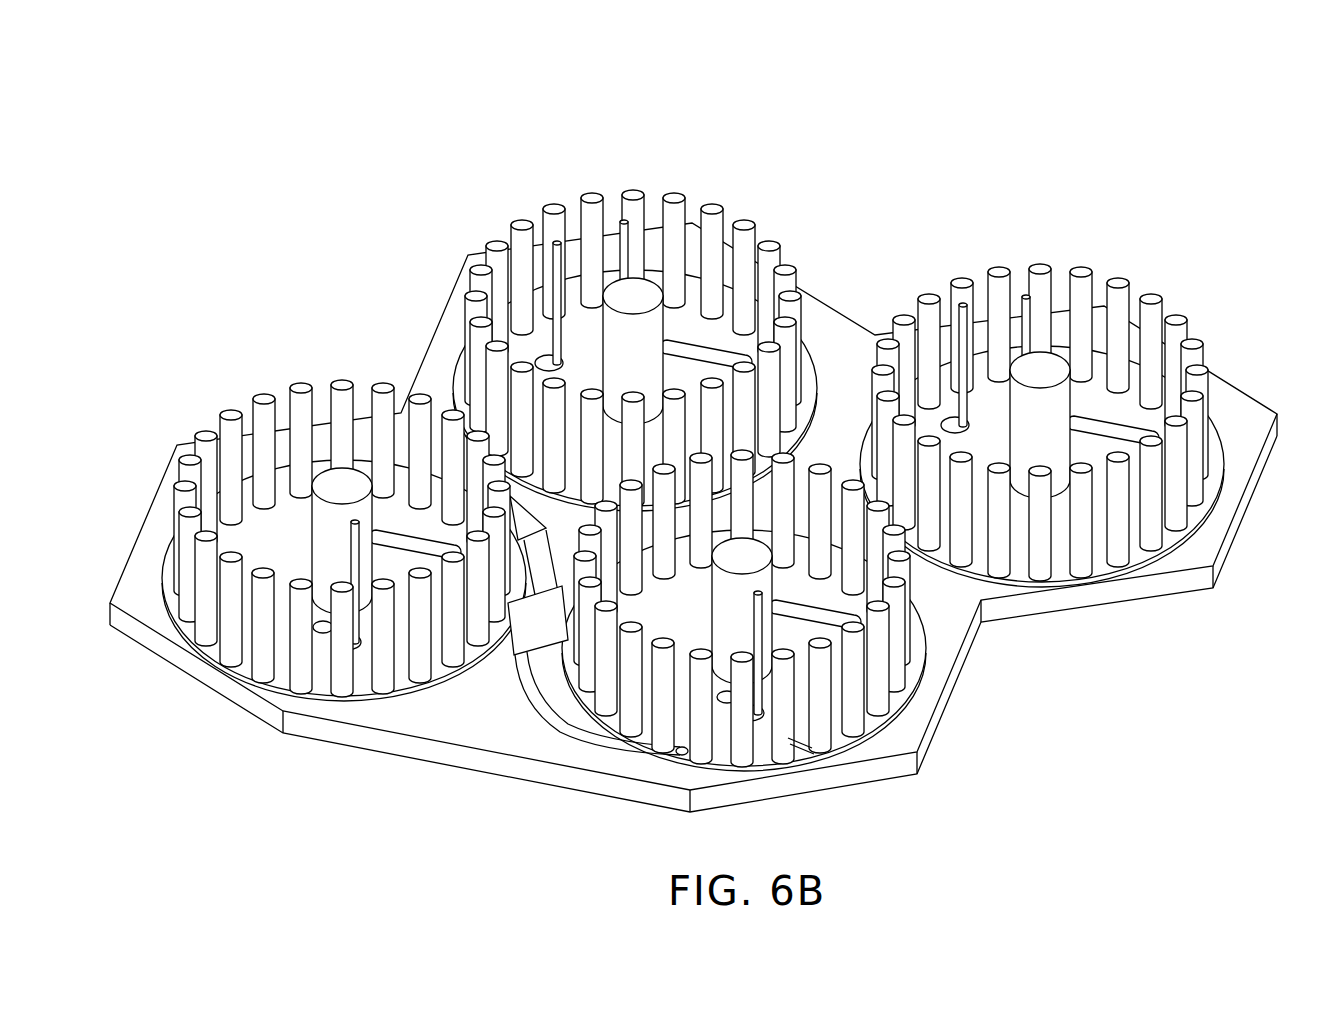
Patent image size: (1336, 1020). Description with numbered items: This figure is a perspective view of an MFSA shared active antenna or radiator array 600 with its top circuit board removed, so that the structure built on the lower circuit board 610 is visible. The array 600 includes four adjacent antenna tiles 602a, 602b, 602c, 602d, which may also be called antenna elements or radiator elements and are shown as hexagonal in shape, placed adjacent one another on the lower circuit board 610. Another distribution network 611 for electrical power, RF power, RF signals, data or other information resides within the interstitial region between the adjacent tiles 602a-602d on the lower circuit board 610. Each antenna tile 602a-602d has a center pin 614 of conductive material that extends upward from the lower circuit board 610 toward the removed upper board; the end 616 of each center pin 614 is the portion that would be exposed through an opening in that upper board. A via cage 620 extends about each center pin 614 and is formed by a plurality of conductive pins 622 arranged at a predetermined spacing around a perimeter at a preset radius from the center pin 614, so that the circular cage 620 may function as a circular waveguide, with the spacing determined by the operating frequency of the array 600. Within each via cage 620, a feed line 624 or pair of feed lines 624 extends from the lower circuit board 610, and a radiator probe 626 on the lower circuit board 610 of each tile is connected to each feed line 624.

The MFSA shared active antenna or radiator array 600 is at (691, 449).
The lower circuit board 610 is at (110, 585).
The distribution network 611 is at (510, 697).
The antenna tile 602a is at (150, 492).
The antenna tile 602b is at (455, 310).
The antenna tile 602c is at (1250, 396).
The antenna tile 602d is at (935, 740).
The center pin 614 is at (719, 497).
The end of center pin 616 is at (744, 497).
The via cage 620 is at (803, 745).
The pins 622 is at (719, 497).
The feed line 624 is at (744, 497).
The radiator probe 626 is at (950, 437).